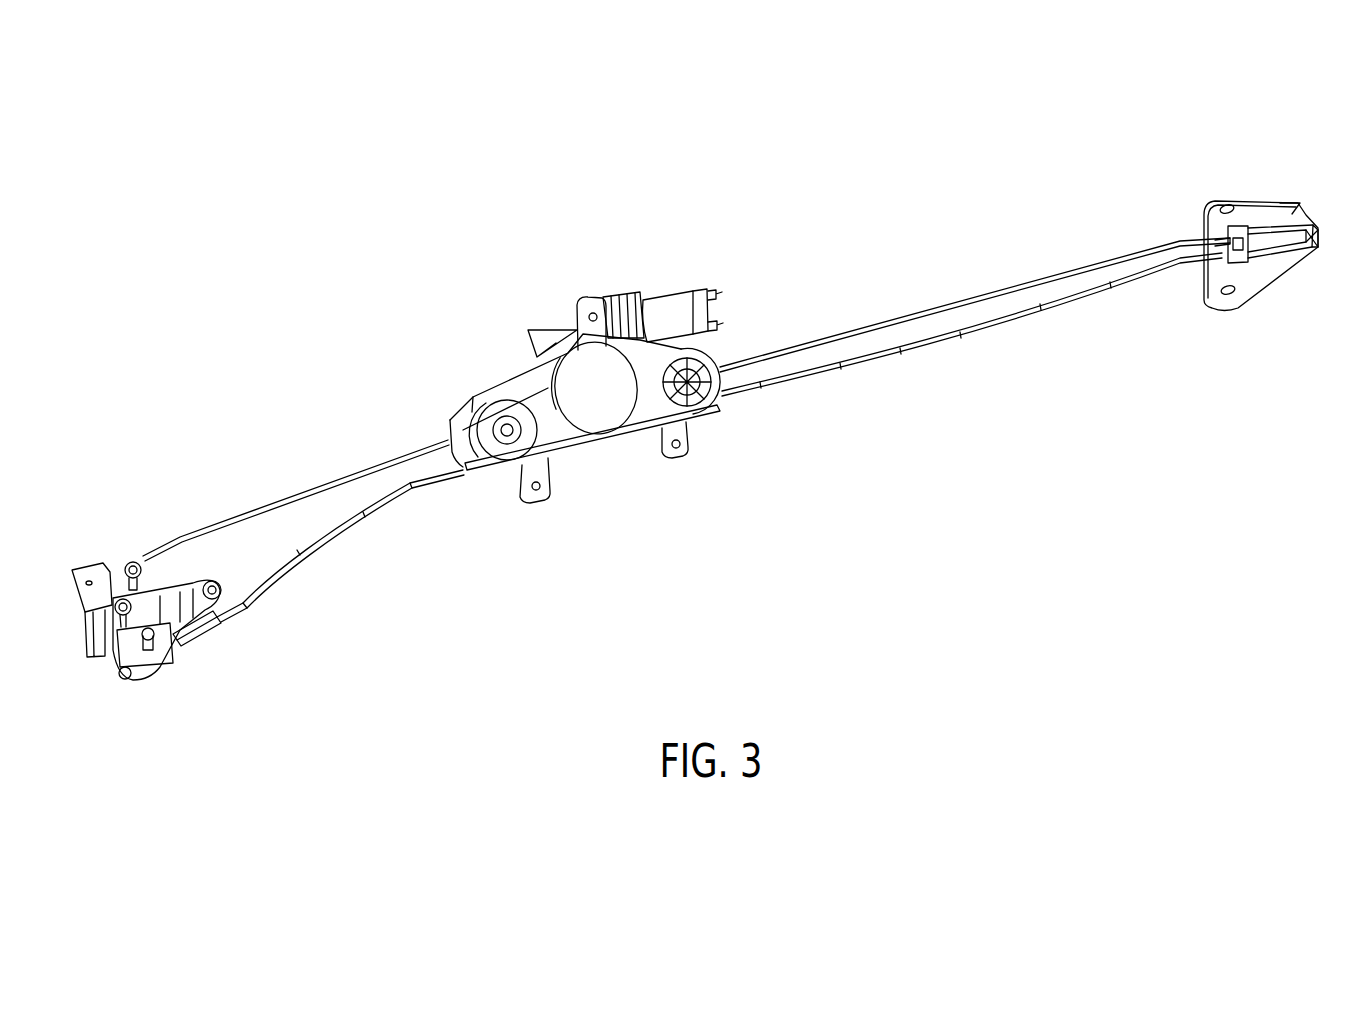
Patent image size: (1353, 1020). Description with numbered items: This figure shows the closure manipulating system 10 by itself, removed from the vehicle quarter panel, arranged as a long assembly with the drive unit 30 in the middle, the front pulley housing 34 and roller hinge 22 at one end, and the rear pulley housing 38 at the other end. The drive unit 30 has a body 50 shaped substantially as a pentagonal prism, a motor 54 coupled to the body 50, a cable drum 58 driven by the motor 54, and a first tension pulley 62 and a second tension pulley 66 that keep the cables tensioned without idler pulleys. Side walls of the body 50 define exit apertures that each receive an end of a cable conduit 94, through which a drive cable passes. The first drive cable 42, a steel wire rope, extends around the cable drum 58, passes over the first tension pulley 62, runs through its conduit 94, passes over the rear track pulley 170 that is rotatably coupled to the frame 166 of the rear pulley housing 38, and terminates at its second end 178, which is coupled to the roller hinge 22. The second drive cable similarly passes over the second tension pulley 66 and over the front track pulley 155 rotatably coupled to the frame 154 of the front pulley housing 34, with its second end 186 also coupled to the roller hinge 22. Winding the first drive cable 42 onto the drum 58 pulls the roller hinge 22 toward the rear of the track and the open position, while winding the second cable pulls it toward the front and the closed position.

The closure manipulating system 10 is at (619, 181).
The roller hinge 22 is at (87, 575).
The drive unit 30 is at (503, 385).
The front pulley housing 34 is at (155, 663).
The rear pulley housing 38 is at (1250, 212).
The first drive cable 42 is at (786, 350).
The body 50 is at (555, 450).
The motor 54 is at (694, 292).
The cable drum 58 is at (596, 420).
The first tension pulley 62 is at (508, 460).
The second tension pulley 66 is at (646, 420).
The cable conduit 94 is at (937, 344).
The frame 154 is at (203, 637).
The front track pulley 155 is at (137, 637).
The frame 166 is at (1230, 300).
The rear track pulley 170 is at (1290, 256).
The second end 178 is at (145, 545).
The second end 186 is at (150, 594).